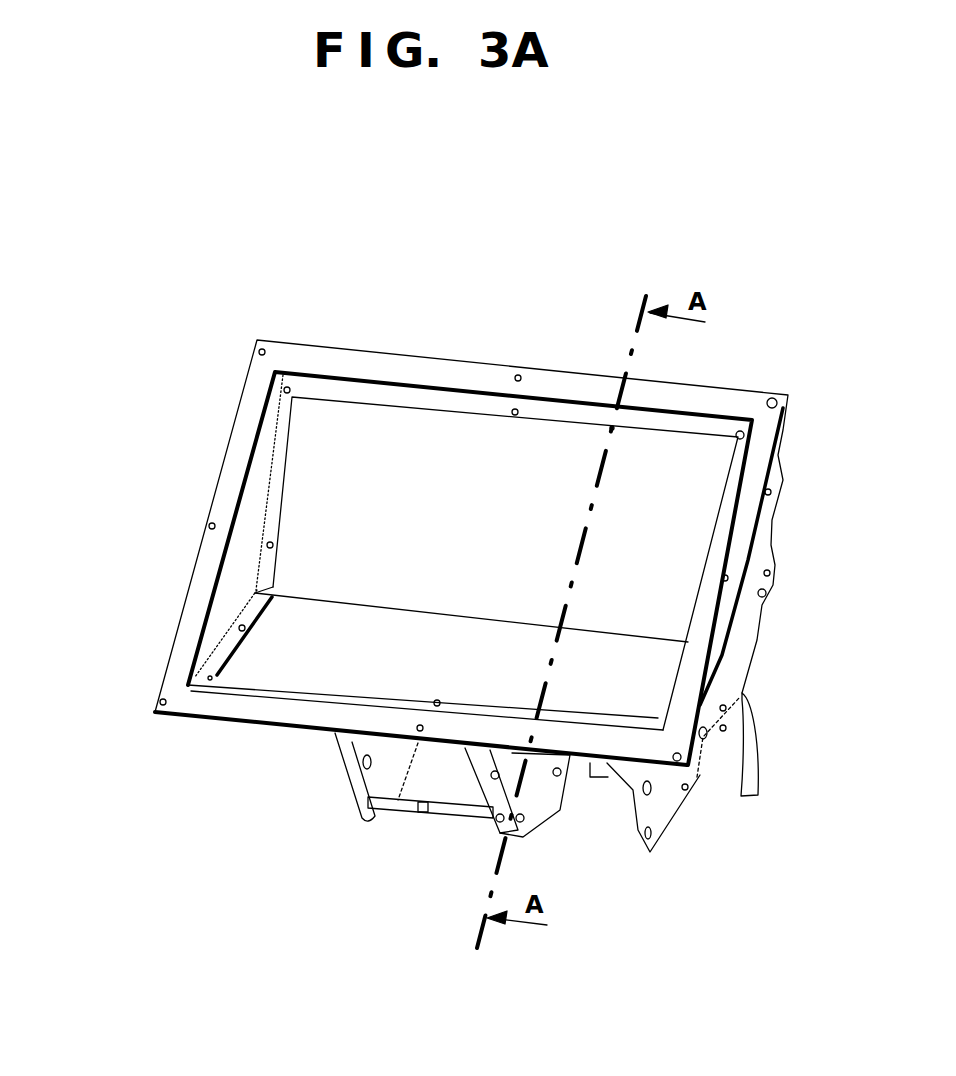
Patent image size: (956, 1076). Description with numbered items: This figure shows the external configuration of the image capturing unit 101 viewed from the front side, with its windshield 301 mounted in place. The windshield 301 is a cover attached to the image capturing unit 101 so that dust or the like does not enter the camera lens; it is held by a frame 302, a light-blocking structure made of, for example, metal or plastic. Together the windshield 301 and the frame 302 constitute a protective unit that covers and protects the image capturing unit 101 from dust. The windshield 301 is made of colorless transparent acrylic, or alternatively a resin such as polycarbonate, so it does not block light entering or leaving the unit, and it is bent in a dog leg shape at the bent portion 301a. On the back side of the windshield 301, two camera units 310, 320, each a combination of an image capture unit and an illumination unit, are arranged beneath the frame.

The image capturing unit 101 is at (488, 298).
The windshield 301 is at (425, 497).
The bent portion 301a is at (348, 603).
The frame 302 is at (235, 497).
The camera unit 310 is at (660, 798).
The camera unit 320 is at (365, 780).